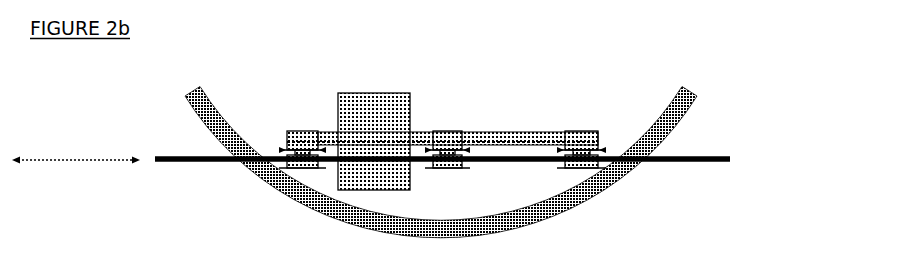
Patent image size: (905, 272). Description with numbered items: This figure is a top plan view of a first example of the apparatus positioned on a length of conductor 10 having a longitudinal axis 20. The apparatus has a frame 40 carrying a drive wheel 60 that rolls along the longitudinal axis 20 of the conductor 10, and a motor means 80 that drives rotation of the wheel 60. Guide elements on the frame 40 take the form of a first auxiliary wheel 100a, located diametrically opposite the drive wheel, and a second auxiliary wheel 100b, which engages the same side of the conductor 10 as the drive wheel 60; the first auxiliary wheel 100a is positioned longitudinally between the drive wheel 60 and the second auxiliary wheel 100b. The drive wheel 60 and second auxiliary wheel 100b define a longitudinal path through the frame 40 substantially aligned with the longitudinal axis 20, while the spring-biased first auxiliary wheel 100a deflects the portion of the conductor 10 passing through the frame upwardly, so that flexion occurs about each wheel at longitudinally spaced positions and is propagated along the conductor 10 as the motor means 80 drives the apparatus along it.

The conductor 10 is at (455, 160).
The longitudinal axis 20 is at (76, 151).
The frame 40 is at (442, 129).
The wheel 60 is at (295, 138).
The motor means 80 is at (374, 132).
The first auxiliary wheel 100a is at (447, 161).
The second auxiliary wheel 100b is at (588, 139).